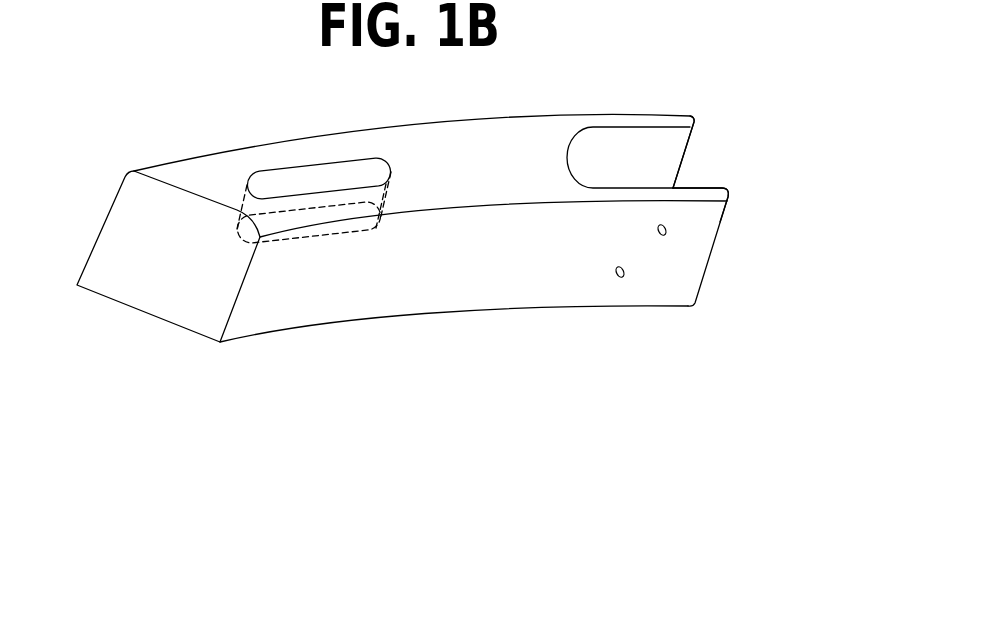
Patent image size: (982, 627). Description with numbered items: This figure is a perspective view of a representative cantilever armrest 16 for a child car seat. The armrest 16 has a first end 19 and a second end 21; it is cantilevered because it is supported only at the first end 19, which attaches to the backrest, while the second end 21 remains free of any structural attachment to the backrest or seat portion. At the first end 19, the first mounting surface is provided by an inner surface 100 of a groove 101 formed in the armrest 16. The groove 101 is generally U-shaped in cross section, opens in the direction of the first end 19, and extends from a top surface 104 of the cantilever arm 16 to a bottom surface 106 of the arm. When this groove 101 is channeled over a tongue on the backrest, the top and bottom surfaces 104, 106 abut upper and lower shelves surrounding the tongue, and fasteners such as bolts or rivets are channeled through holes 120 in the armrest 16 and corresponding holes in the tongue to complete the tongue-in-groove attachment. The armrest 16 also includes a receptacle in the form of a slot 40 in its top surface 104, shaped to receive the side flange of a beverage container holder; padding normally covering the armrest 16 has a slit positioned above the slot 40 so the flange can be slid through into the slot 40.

The cantilever armrest 16 is at (468, 300).
The first end 19 is at (698, 115).
The second end 21 is at (147, 283).
The slot 40 is at (295, 182).
The inner surface 100 is at (653, 174).
The groove 101 is at (692, 175).
The top surface 104 is at (477, 148).
The bottom surface 106 is at (520, 313).
The holes 120 is at (660, 237).